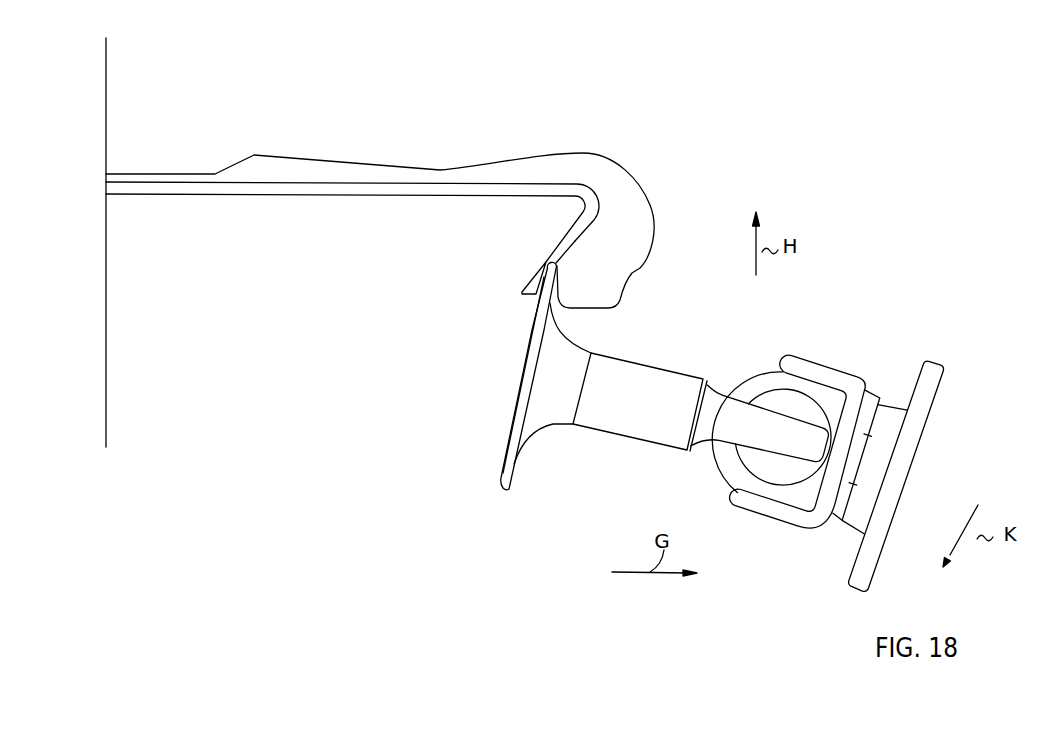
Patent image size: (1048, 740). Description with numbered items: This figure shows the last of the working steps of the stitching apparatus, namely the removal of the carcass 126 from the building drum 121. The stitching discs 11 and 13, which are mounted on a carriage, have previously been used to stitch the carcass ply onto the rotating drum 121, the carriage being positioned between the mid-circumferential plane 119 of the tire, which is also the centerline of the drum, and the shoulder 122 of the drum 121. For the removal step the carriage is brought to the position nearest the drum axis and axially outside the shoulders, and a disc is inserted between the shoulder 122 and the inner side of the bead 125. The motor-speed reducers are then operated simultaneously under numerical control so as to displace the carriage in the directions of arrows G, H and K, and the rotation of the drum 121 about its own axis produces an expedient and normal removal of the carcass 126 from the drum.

The stitching disc 11 is at (498, 482).
The stitching disc 13 is at (937, 369).
The mid-circumferential plane 119 is at (106, 80).
The building drum 121 is at (258, 190).
The shoulder 122 is at (545, 258).
The bead 125 is at (560, 266).
The carcass 126 is at (353, 164).